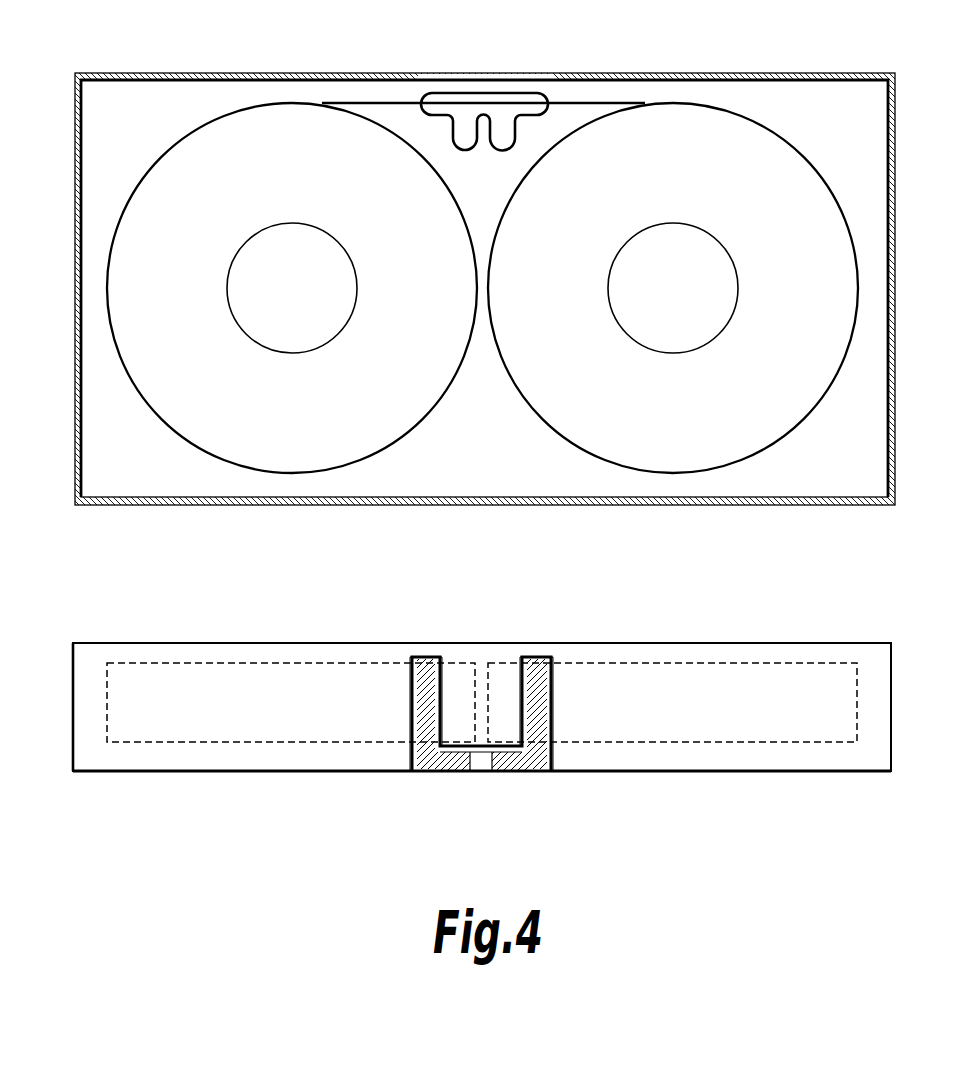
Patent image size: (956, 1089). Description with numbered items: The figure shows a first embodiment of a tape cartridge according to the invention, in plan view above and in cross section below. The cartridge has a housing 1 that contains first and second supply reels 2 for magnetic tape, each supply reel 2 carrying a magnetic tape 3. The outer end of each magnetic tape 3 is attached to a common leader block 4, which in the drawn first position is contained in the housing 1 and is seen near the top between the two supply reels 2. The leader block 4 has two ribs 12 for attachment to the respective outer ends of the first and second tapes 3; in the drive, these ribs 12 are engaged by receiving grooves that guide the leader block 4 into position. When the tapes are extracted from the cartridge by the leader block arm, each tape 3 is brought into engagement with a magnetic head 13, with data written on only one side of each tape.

The housing 1 is at (104, 450).
The supply reel 2 is at (539, 365).
The magnetic tape 3 is at (565, 103).
The leader block 4 is at (455, 103).
The rib 12 is at (537, 688).
The magnetic head 13 is at (440, 762).